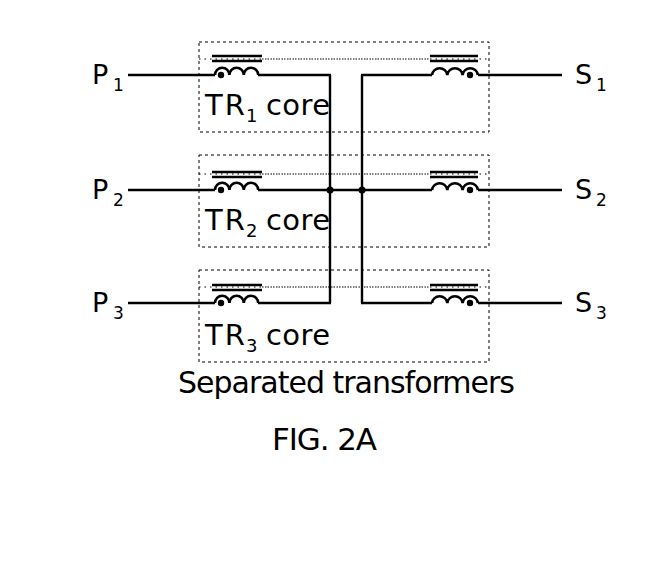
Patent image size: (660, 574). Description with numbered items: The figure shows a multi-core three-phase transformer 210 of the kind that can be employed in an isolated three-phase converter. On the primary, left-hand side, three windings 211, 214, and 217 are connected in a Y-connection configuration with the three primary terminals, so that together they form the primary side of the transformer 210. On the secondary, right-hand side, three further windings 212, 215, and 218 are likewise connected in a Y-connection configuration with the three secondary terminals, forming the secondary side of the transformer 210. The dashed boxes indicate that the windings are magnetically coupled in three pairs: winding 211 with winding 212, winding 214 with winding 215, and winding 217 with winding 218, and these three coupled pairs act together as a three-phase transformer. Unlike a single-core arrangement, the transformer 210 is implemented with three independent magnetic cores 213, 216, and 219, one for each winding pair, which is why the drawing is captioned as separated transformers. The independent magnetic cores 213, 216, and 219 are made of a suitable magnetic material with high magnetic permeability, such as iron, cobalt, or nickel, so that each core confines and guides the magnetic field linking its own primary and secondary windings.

The multi-core three-phase transformer 210 is at (362, 26).
The winding 211 is at (203, 63).
The winding 212 is at (480, 67).
The independent magnetic core 213 is at (382, 55).
The winding 214 is at (203, 177).
The winding 215 is at (480, 181).
The independent magnetic core 216 is at (377, 175).
The winding 217 is at (203, 292).
The winding 218 is at (480, 295).
The independent magnetic core 219 is at (377, 290).